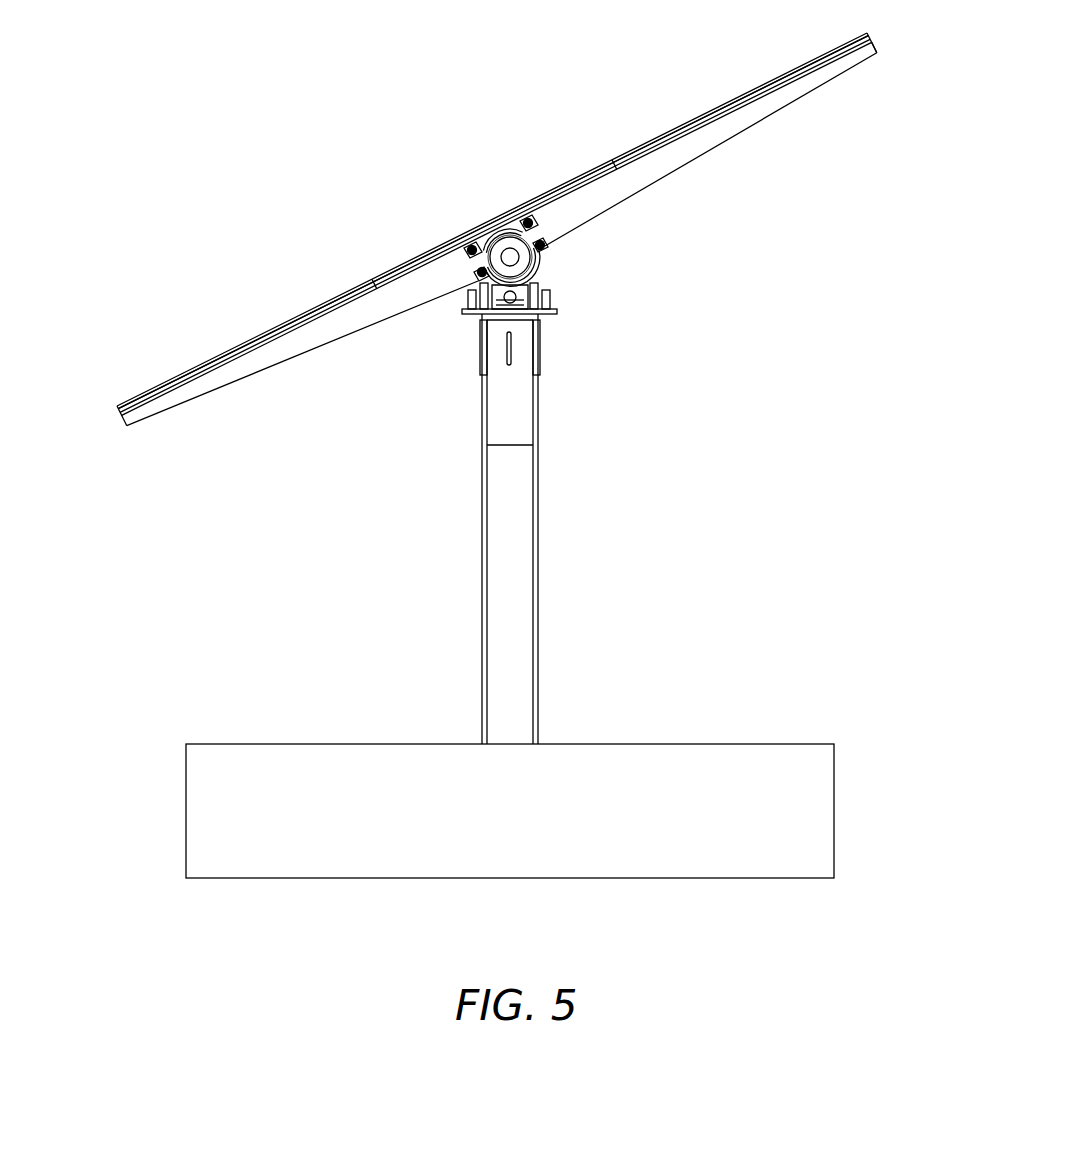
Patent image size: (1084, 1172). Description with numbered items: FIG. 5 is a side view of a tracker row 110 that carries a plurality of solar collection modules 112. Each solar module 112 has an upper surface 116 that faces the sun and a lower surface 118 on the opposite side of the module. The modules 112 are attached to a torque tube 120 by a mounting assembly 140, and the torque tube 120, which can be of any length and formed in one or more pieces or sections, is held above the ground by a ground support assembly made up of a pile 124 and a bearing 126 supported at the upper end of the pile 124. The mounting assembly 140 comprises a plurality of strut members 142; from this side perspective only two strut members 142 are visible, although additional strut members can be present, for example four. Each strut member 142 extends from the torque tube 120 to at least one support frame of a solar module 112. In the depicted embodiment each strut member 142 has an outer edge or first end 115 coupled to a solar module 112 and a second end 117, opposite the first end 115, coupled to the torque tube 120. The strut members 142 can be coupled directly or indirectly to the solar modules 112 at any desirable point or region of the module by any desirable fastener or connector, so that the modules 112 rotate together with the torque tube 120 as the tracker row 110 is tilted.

The tracker row 110 is at (190, 160).
The solar collection modules 112 is at (262, 333).
The first end 115 is at (117, 408).
The upper surface 116 is at (813, 62).
The second end 117 is at (468, 253).
The lower surface 118 is at (847, 53).
The torque tube 120 is at (510, 257).
The pile 124 is at (510, 522).
The bearing 126 is at (493, 295).
The mounting assembly 140 is at (652, 292).
The strut members 142 is at (343, 332).